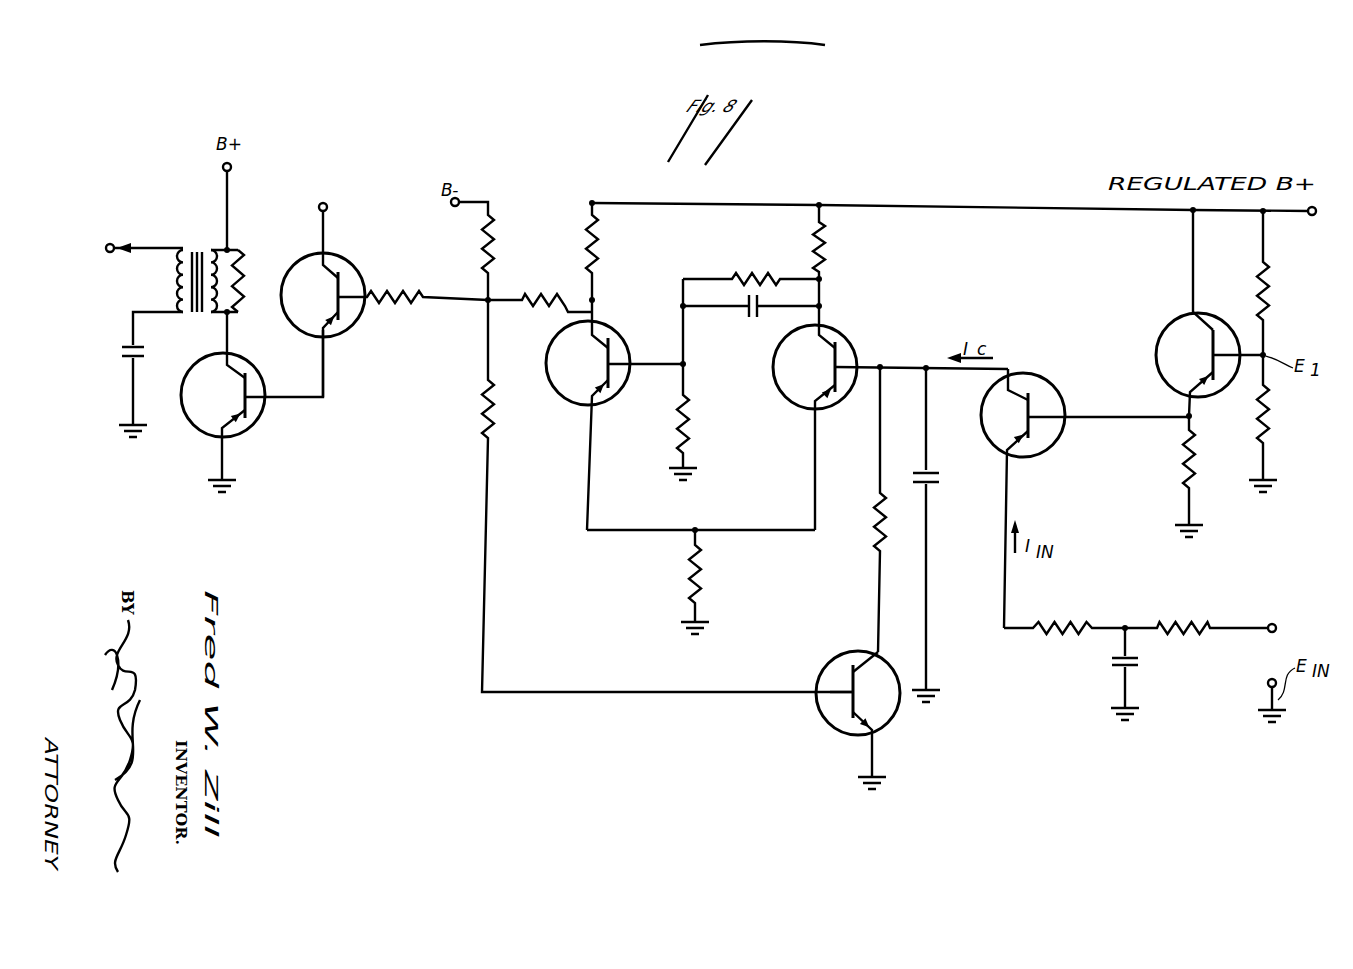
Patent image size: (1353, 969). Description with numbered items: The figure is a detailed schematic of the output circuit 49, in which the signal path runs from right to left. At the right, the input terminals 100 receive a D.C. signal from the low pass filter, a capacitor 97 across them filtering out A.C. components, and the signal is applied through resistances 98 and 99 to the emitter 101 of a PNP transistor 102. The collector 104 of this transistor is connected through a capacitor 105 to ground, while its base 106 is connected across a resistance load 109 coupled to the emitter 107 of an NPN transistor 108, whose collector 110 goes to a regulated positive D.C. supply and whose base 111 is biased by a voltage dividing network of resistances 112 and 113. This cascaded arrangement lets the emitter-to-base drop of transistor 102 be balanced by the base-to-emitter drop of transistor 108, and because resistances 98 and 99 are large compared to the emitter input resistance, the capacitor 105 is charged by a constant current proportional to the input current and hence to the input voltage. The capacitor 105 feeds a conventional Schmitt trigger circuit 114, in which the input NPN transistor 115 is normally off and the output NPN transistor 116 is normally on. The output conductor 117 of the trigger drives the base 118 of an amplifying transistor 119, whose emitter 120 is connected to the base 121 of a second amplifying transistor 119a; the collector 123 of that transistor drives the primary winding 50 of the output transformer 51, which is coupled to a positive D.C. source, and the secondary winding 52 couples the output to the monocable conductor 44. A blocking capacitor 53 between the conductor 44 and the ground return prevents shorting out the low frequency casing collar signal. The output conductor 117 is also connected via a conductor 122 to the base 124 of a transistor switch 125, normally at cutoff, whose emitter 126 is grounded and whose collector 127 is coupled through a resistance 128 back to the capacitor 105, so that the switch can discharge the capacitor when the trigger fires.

The monocable conductor 44 is at (122, 244).
The primary winding 50 is at (173, 275).
The output transformer 51 is at (193, 315).
The secondary winding 52 is at (172, 283).
The blocking capacitor 53 is at (122, 352).
The amplifying transistor 119a is at (236, 362).
The collector 123 is at (252, 402).
The base 121 is at (252, 392).
The amplifying transistor 119 is at (384, 289).
The base 118 is at (357, 280).
The emitter 120 is at (336, 334).
The output conductor 117 is at (512, 298).
The output NPN transistor 116 is at (600, 330).
The conductor 122 is at (483, 570).
The Schmitt trigger circuit 114 is at (750, 444).
The input NPN transistor 115 is at (848, 338).
The resistance 128 is at (872, 532).
The collector 127 is at (866, 655).
The base 124 is at (843, 683).
The transistor switch 125 is at (850, 705).
The emitter 126 is at (880, 722).
The output circuit 49 is at (688, 759).
The capacitor 105 is at (940, 476).
The collector 104 is at (1012, 388).
The base 106 is at (1032, 410).
The PNP transistor 102 is at (1085, 474).
The emitter 101 is at (1010, 445).
The NPN transistor 108 is at (1217, 314).
The collector 110 is at (1197, 320).
The base 111 is at (1222, 352).
The emitter 107 is at (1197, 370).
The resistance 112 is at (1266, 303).
The resistance 113 is at (1266, 405).
The resistance load 109 is at (1185, 460).
The resistance 98 is at (1060, 638).
The resistance 99 is at (1188, 625).
The capacitor 97 is at (1140, 660).
The input terminals 100 is at (1278, 630).